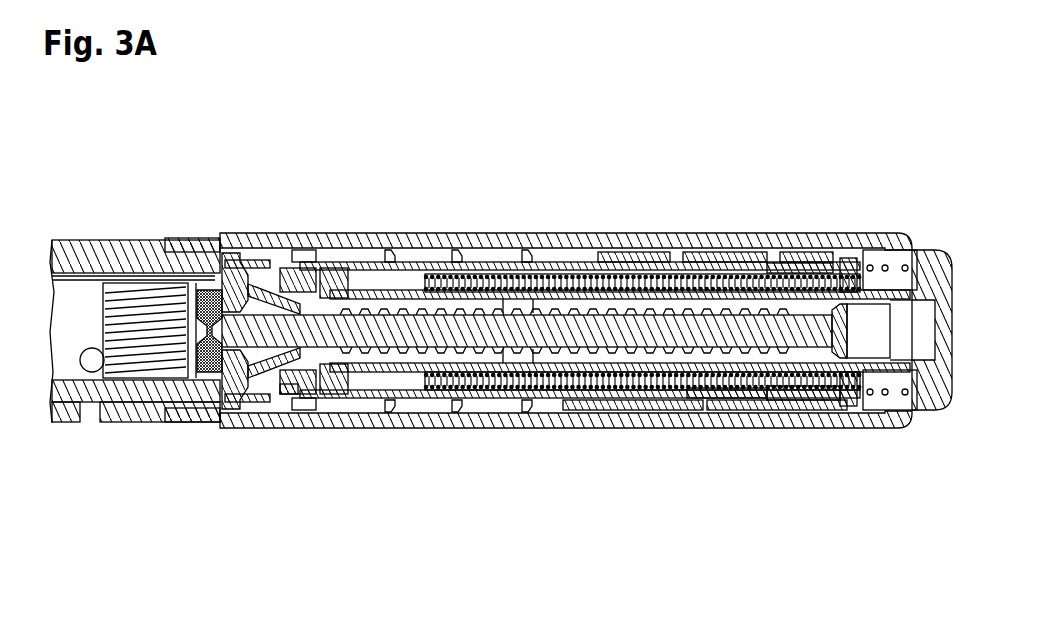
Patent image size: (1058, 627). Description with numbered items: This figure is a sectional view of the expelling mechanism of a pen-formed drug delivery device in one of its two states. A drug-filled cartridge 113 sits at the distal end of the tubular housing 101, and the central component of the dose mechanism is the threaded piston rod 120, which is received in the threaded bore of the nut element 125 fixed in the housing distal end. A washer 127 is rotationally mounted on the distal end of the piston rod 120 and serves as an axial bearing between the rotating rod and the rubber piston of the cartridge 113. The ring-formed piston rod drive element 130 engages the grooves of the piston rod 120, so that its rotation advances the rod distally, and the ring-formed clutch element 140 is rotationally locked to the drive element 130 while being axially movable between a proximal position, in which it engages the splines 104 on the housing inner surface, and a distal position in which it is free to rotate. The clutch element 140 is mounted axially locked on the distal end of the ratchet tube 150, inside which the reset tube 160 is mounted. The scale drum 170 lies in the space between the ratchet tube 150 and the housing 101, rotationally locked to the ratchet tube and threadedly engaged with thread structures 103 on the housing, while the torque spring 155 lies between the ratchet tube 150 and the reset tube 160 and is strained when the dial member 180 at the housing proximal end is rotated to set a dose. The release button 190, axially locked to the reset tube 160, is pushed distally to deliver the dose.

The housing 101 is at (258, 243).
The thread structures 103 is at (388, 257).
The splines 104 is at (302, 252).
The cartridge 113 is at (76, 298).
The piston rod 120 is at (522, 325).
The nut element 125 is at (240, 355).
The washer 127 is at (209, 300).
The piston rod drive element 130 is at (275, 357).
The clutch element 140 is at (285, 390).
The ratchet tube 150 is at (333, 383).
The torque spring 155 is at (715, 277).
The reset tube 160 is at (372, 370).
The scale drum 170 is at (620, 257).
The dial member 180 is at (827, 233).
The release button 190 is at (933, 252).